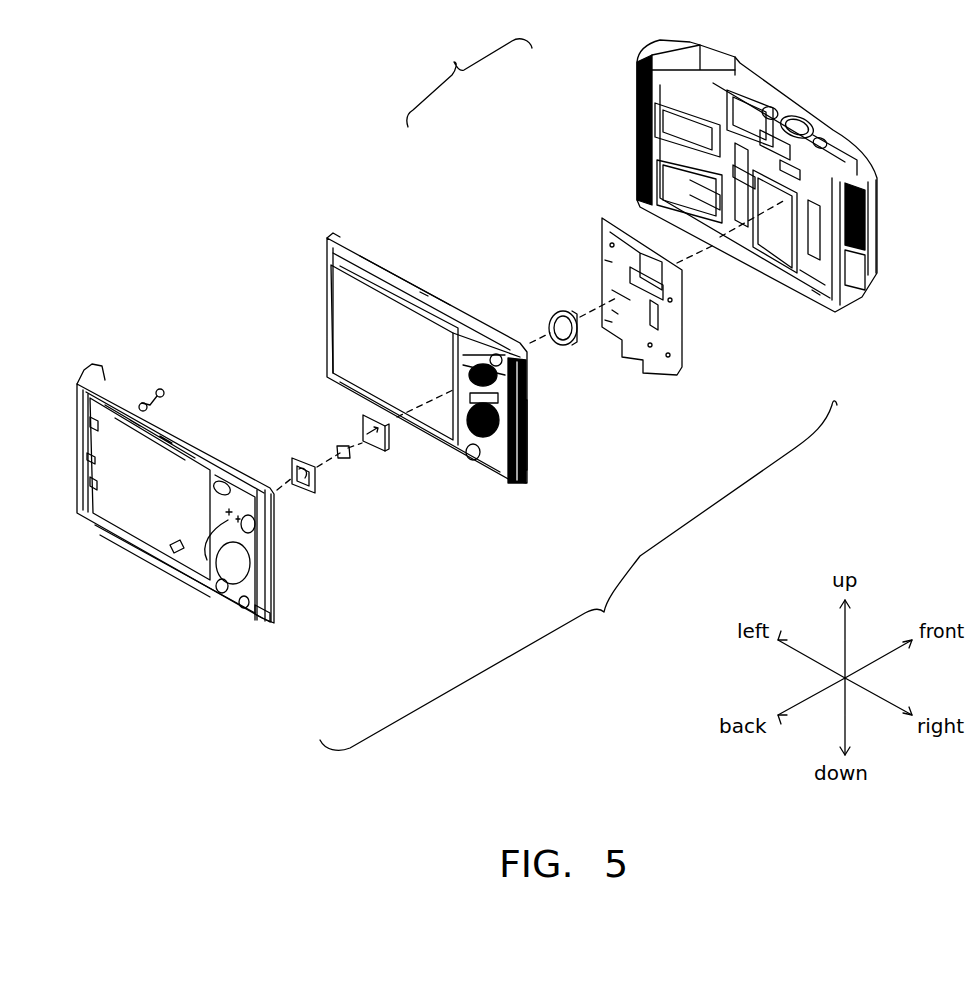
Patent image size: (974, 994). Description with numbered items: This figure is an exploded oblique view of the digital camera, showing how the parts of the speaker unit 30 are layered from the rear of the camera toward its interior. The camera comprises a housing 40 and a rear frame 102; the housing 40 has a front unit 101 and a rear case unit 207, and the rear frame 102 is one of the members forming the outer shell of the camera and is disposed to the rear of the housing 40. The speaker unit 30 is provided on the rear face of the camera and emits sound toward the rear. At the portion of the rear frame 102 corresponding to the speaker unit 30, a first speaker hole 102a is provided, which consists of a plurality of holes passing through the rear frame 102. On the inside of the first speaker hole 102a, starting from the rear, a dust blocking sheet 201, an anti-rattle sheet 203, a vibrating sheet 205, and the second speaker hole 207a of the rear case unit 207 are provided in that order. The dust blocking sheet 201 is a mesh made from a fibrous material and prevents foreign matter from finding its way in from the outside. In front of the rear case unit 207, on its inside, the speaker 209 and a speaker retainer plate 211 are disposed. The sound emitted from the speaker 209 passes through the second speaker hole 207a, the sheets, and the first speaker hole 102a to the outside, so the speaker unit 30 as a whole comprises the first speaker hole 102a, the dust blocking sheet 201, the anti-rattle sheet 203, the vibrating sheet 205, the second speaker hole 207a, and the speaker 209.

The speaker unit 30 is at (578, 576).
The housing 40 is at (469, 77).
The front unit 101 is at (637, 128).
The rear frame 102 is at (170, 570).
The first speaker hole 102a is at (250, 603).
The dust blocking sheet 201 is at (314, 494).
The anti-rattle sheet 203 is at (347, 458).
The vibrating sheet 205 is at (387, 453).
The rear case unit 207 is at (356, 258).
The second speaker hole 207a is at (525, 397).
The speaker 209 is at (575, 345).
The speaker retainer plate 211 is at (645, 265).